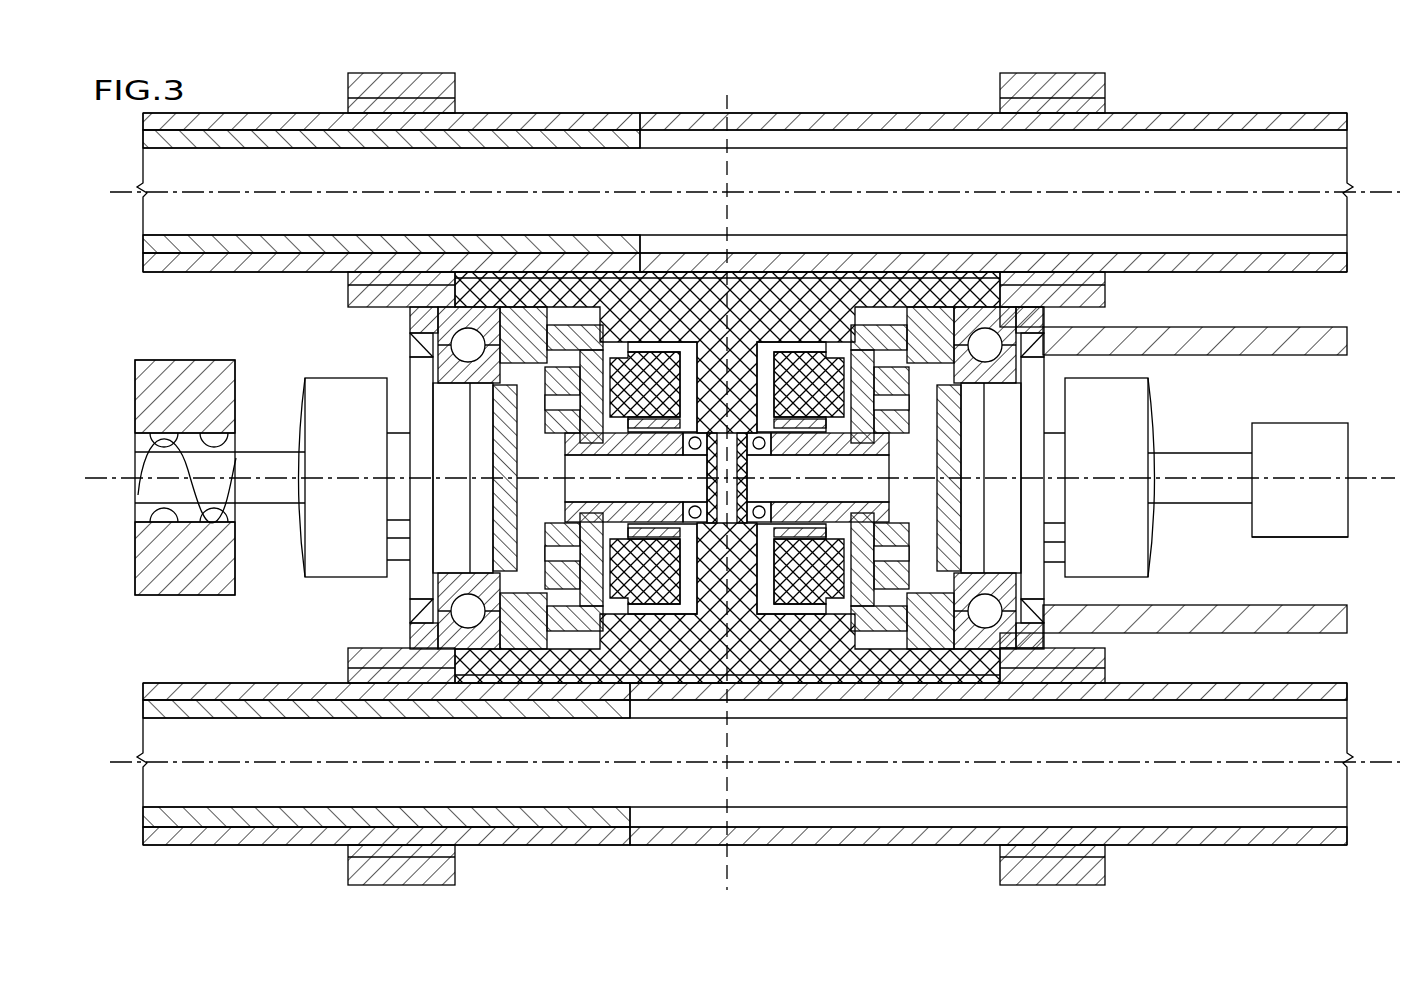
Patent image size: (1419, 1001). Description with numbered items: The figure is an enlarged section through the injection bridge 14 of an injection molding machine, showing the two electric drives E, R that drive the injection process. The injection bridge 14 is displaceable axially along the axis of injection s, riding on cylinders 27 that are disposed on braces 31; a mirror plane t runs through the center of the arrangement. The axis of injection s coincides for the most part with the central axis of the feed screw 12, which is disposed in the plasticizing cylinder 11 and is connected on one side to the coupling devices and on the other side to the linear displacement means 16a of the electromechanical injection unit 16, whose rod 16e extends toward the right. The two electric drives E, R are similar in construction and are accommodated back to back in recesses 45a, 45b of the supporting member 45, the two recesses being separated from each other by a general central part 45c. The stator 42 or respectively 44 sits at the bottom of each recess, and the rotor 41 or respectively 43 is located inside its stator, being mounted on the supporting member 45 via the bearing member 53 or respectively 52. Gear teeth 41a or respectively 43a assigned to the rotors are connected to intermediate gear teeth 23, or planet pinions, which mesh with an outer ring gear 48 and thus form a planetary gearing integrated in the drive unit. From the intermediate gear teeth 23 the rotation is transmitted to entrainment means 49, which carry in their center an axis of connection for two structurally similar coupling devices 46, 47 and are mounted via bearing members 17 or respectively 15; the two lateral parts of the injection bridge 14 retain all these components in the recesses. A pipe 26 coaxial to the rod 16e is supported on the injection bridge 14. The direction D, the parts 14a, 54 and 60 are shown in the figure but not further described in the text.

The plasticizing cylinder 11 is at (166, 380).
The feed screw 12 is at (203, 498).
The injection bridge 14 is at (450, 86).
The block flange 14a is at (370, 852).
The bearing member 15 is at (468, 326).
The electromechanical injection unit 16 is at (1338, 312).
The linear displacement means 16a is at (1267, 543).
The rod 16e is at (1308, 479).
The bearing member 17 is at (986, 326).
The intermediate gear teeth 23 is at (521, 320).
The pipe 26 is at (1312, 347).
The cylinders 27 is at (608, 122).
The braces 31 is at (1300, 183).
The rotor 41 is at (960, 580).
The gear teeth 41a is at (1021, 455).
The stator 42 is at (792, 345).
The rotor 43 is at (640, 600).
The gear teeth 43a is at (440, 454).
The stator 44 is at (652, 336).
The supporting member 45 is at (748, 300).
The recess 45a is at (700, 335).
The recess 45b is at (746, 620).
The central part 45c is at (722, 625).
The coupling device 46 is at (360, 400).
The coupling device 47 is at (1138, 402).
The outer ring gear 48 is at (942, 300).
The entrainment means 49 is at (413, 375).
The bearing member 52 is at (697, 457).
The bearing member 53 is at (758, 457).
The stator 54 is at (567, 335).
The spacer 60 is at (362, 336).
The direction D is at (849, 110).
The first electric drive E is at (812, 338).
The electric drive R is at (655, 290).
The axis of injection s is at (749, 485).
The axis t is at (726, 489).